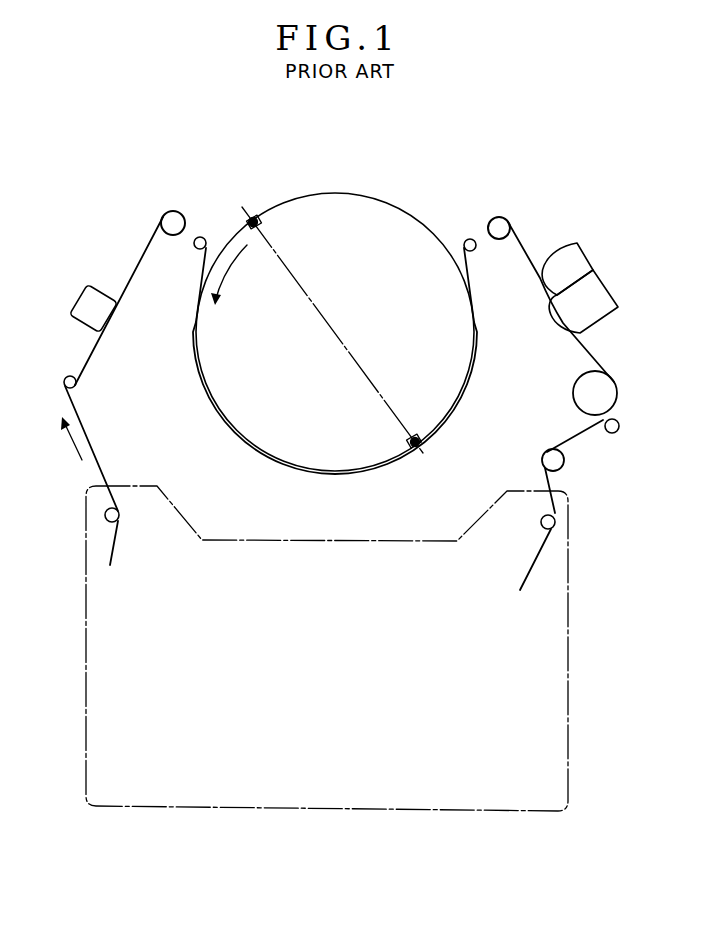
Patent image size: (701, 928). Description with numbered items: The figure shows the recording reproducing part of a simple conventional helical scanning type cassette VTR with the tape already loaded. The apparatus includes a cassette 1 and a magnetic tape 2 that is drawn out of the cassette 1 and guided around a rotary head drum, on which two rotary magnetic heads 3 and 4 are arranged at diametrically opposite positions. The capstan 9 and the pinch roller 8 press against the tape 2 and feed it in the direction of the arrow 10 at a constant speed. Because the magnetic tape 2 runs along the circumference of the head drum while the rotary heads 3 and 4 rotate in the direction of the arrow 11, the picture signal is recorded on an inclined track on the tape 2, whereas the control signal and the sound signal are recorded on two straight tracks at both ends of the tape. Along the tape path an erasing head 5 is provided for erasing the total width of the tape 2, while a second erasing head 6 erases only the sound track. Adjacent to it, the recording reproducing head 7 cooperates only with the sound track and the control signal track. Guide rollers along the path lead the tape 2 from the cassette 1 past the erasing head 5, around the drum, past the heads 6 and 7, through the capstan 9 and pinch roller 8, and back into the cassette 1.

The cassette 1 is at (567, 643).
The magnetic tape 2 is at (137, 270).
The rotary magnetic head 3 is at (260, 215).
The rotary magnetic head 4 is at (430, 433).
The erasing head 5 is at (80, 318).
The erasing head 6 is at (558, 262).
The recording reproducing head 7 is at (600, 290).
The pinch roller 8 is at (605, 387).
The capstan 9 is at (613, 435).
The arrow 10 is at (73, 440).
The arrow 11 is at (232, 264).